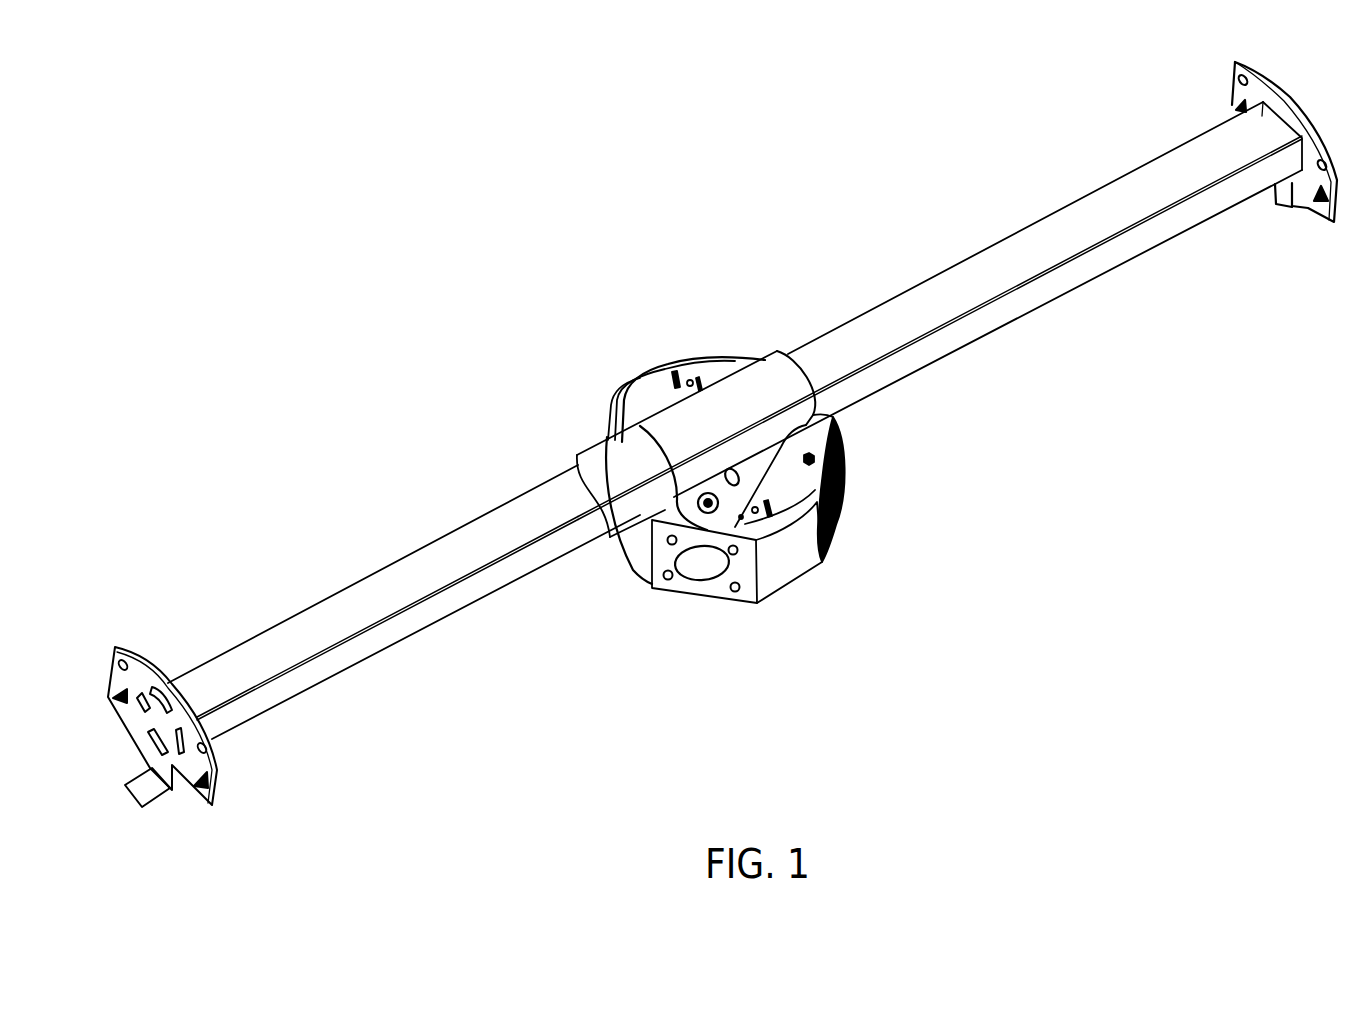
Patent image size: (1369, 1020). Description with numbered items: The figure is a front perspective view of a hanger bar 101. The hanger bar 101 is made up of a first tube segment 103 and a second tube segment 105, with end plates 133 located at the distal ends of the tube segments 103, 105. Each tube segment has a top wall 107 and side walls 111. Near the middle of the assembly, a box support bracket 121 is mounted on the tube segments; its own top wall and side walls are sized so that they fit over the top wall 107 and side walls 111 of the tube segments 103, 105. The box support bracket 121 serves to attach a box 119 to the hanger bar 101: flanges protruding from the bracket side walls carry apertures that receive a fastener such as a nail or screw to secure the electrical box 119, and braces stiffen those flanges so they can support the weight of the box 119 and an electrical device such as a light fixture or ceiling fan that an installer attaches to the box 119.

The hanger bar 101 is at (583, 234).
The first tube segment 103 is at (268, 584).
The second tube segment 105 is at (968, 220).
The top wall 107 is at (1048, 270).
The side walls 111 is at (972, 327).
The box 119 is at (788, 562).
The box support bracket 121 is at (773, 385).
The end plates 133 is at (190, 760).